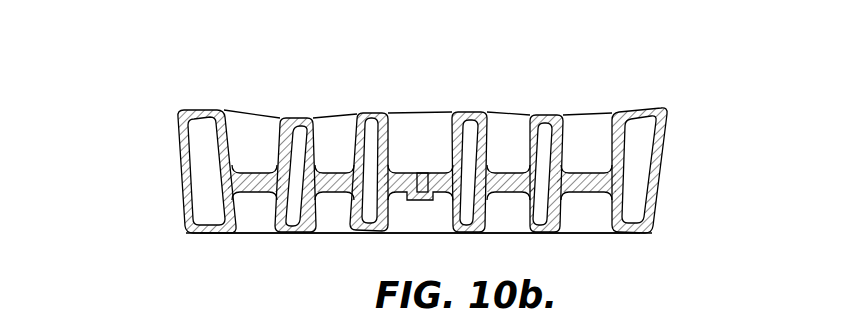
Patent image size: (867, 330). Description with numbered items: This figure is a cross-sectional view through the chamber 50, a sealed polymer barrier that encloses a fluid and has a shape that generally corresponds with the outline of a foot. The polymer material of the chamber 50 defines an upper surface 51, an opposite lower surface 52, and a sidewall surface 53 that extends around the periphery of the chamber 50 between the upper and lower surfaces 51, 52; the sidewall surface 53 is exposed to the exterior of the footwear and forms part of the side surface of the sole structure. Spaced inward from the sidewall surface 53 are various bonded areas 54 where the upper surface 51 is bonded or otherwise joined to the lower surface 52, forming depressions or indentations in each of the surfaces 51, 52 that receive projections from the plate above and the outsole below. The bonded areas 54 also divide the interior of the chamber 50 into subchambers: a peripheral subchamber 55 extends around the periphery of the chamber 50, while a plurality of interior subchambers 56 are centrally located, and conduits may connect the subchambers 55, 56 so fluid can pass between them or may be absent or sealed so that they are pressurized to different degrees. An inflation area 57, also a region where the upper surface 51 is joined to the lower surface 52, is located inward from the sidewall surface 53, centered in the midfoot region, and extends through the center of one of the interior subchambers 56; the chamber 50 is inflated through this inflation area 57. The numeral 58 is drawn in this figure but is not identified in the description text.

The chamber 50 is at (663, 108).
The upper surface 51 is at (577, 112).
The lower surface 52 is at (251, 235).
The sidewall surface 53 is at (177, 168).
The bonded areas 54 is at (258, 172).
The peripheral subchamber 55 is at (210, 109).
The interior subchambers 56 is at (372, 110).
The inflation area 57 is at (406, 172).
The protrusion 58 is at (421, 173).